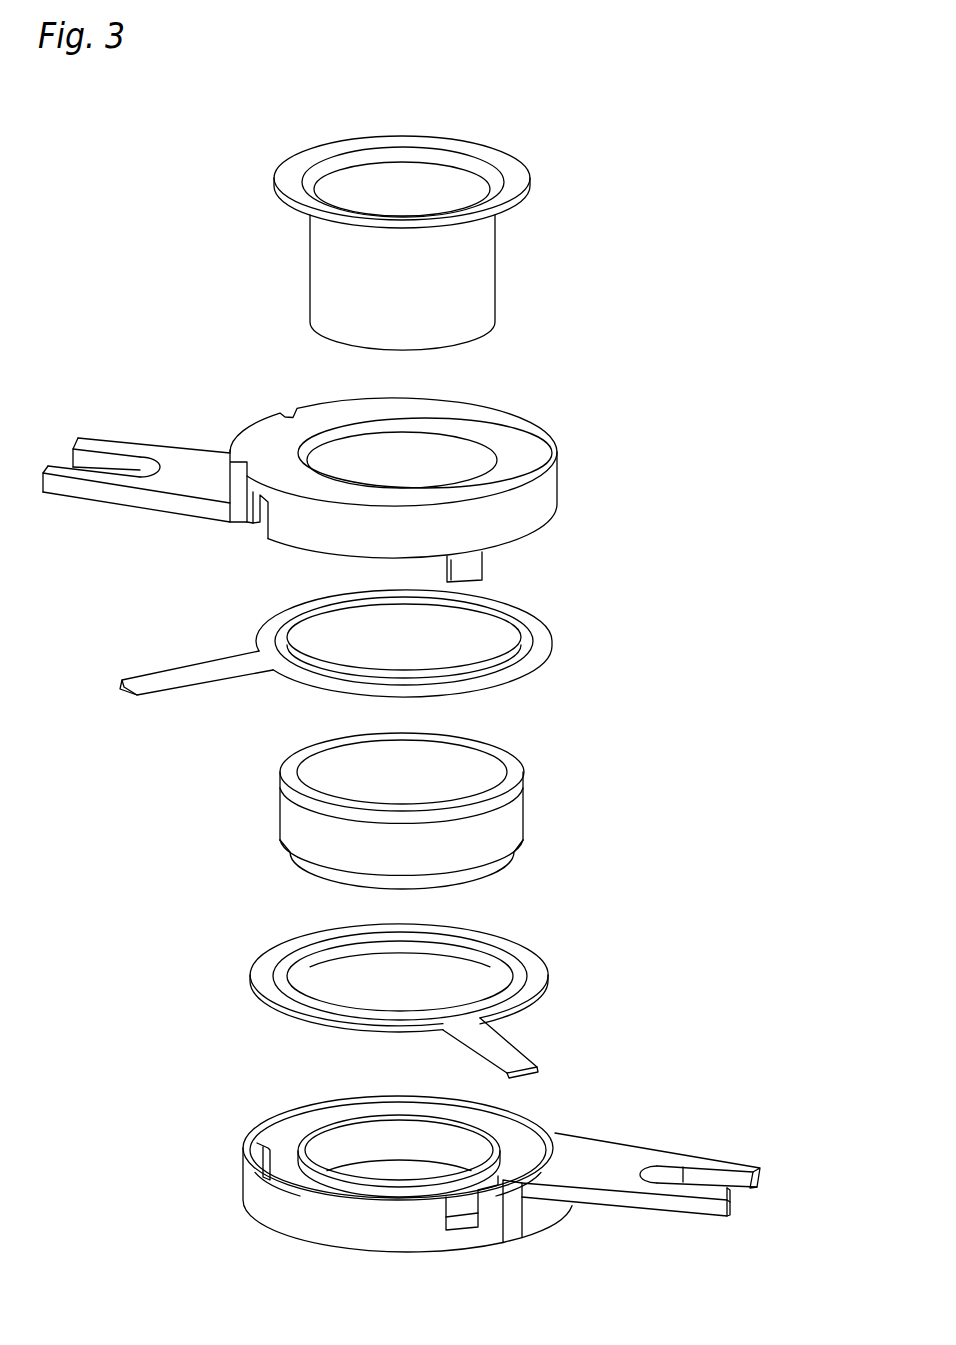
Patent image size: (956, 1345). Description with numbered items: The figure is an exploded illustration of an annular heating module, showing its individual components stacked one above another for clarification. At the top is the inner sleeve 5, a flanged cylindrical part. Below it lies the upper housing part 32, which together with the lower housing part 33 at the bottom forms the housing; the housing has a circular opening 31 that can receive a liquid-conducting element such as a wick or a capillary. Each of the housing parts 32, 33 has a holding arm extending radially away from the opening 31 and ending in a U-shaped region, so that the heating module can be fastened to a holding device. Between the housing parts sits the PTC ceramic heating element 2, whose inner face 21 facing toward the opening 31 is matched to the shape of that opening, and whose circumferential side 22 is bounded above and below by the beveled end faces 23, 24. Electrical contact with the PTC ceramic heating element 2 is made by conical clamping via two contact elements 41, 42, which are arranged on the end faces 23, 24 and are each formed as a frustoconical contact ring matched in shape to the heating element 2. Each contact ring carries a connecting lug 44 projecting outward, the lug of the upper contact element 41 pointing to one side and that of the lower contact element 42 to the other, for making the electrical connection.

The PTC ceramic heating element 2 is at (398, 816).
The inner sleeve 5 is at (496, 257).
The inner face 21 is at (336, 772).
The circumferential side surface 22 is at (525, 815).
The end face 23 is at (507, 762).
The end face 24 is at (468, 880).
The opening 31 is at (421, 481).
The housing part 32 is at (342, 474).
The housing part 33 is at (243, 1187).
The contact element 41 is at (553, 645).
The contact element 42 is at (550, 971).
The connecting lug 44 is at (138, 680).